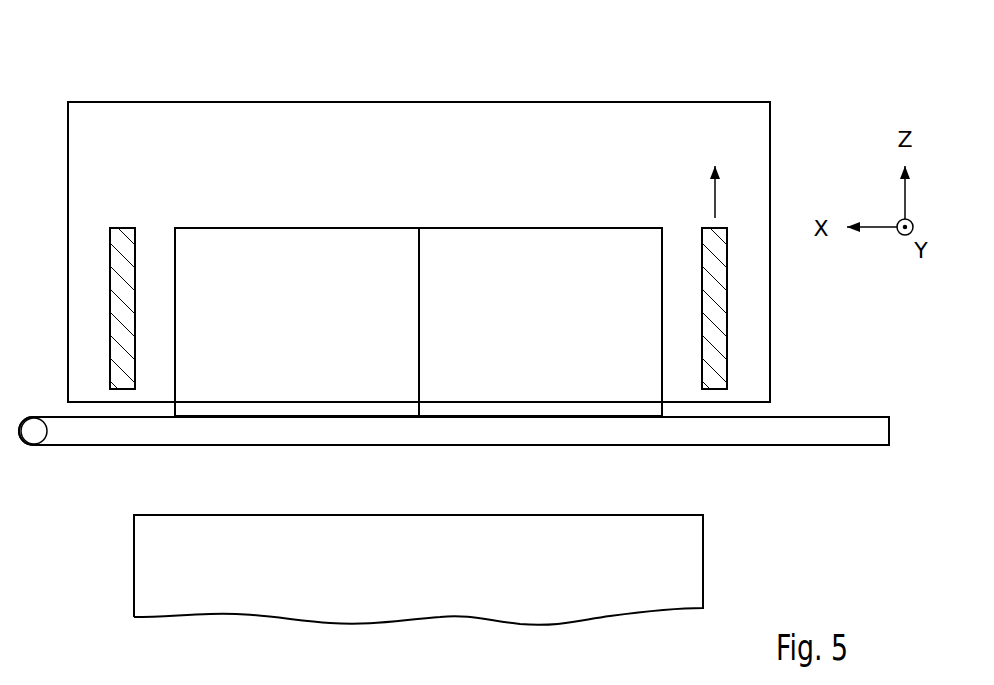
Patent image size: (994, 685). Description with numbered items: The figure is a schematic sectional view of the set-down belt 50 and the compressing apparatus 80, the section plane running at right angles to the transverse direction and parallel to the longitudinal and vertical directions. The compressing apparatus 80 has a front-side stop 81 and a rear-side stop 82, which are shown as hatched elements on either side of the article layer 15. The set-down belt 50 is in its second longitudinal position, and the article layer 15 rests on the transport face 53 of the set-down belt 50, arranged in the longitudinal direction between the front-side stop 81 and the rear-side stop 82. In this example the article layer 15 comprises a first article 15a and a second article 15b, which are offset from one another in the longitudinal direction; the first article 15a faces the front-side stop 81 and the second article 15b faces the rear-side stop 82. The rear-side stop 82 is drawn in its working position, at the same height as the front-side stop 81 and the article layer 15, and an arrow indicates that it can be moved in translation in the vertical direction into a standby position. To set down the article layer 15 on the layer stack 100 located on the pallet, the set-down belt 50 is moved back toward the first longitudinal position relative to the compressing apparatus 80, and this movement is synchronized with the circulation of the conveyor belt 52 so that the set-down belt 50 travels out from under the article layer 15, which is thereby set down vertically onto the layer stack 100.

The compressing apparatus 80 is at (645, 88).
The article layer 15 is at (458, 218).
The first article 15a is at (280, 320).
The second article 15b is at (525, 320).
The front-side stop 81 is at (120, 338).
The rear-side stop 82 is at (718, 336).
The set-down belt 50 is at (74, 460).
The conveyor belt 52 is at (454, 431).
The transport face 53 is at (872, 414).
The layer stack 100 is at (390, 578).